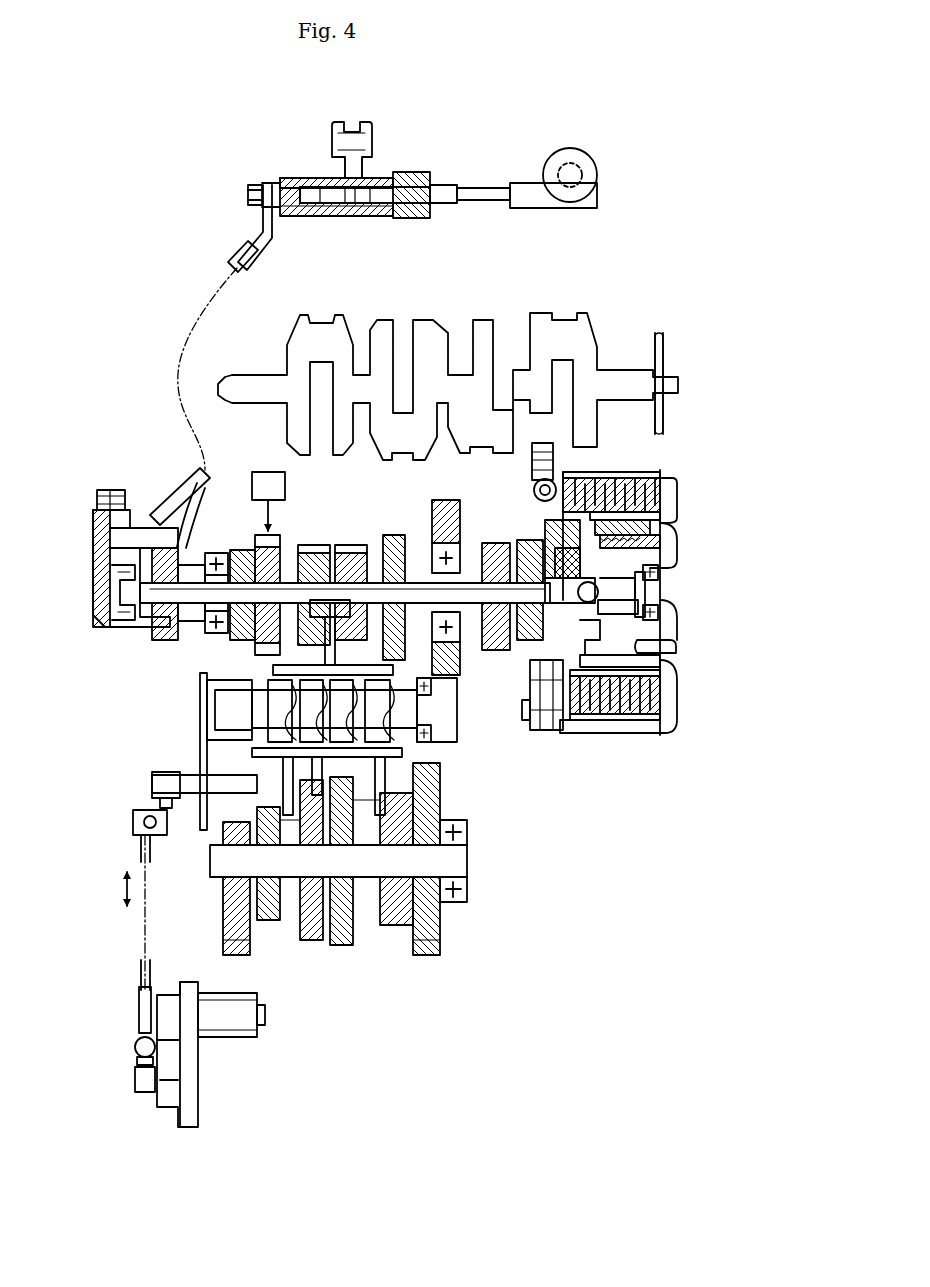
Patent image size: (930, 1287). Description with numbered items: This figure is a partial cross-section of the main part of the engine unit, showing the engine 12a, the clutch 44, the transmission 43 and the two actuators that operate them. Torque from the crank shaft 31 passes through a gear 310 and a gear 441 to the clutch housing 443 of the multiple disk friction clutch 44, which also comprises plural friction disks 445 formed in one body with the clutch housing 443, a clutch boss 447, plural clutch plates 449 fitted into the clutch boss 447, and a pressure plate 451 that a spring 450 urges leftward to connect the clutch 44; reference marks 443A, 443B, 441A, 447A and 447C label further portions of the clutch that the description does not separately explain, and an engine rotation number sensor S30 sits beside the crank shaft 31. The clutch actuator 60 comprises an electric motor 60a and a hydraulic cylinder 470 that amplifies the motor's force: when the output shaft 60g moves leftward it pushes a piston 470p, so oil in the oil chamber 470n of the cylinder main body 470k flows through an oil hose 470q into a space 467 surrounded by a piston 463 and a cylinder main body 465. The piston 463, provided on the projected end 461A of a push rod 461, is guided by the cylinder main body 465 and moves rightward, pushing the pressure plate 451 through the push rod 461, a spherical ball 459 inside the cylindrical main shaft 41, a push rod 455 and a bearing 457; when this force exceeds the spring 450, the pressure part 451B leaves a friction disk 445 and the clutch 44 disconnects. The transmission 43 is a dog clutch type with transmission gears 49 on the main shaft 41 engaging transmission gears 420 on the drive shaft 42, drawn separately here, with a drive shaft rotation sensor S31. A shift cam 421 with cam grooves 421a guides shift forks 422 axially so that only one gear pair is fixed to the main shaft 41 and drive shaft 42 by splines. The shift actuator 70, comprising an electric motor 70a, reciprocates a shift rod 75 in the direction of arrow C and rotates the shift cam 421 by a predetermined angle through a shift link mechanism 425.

The hydraulic cylinder 470 is at (418, 176).
The cylinder main body 470k is at (305, 180).
The oil chamber 470n is at (338, 204).
The piston 470p is at (442, 206).
The oil hose 470q is at (240, 258).
The clutch actuator 60 is at (603, 196).
The output shaft 60g is at (496, 188).
The electric motor 60a is at (572, 150).
The engine 12a is at (584, 298).
The crank shaft 31 is at (500, 318).
The gear 310 is at (537, 482).
The engine rotation number sensor S30 is at (664, 340).
The gear 441 is at (535, 458).
The clutch housing 443 is at (615, 470).
The clutch plates 449 is at (636, 474).
The friction disks 445 is at (662, 478).
The clutch 44 is at (682, 483).
The pressure plate 451 is at (676, 496).
The spring 450 is at (676, 530).
The primary driven gear 443B is at (530, 505).
The clutch boss 443A is at (556, 521).
The clutch inner member 441A is at (566, 536).
The main shaft 41 is at (412, 548).
The end of push rod 461A is at (160, 576).
The piston 463 is at (210, 510).
The space 467 is at (112, 588).
The cylinder main body 465 is at (113, 628).
The push rod 461 is at (299, 590).
The drive shaft rotation sensor S31 is at (287, 487).
The transmission gears 49 is at (351, 540).
The push rod 455 is at (657, 592).
The spherical ball 459 is at (665, 616).
The bearing 457 is at (672, 644).
The clutch boss 447 is at (660, 662).
The second clutch plates 447C is at (670, 674).
The pressure part 451B is at (668, 716).
The pressure plate arm 447A is at (565, 726).
The shift cam 421 is at (273, 684).
The cam grooves 421a is at (374, 700).
The shift forks 422 is at (330, 644).
The shift link mechanism 425 is at (142, 778).
The drive shaft 42 is at (462, 851).
The transmission gears 420 is at (446, 798).
The transmission 43 is at (530, 838).
The shift rod 75 is at (146, 847).
The arrow C is at (114, 889).
The electric motor 70a is at (259, 1030).
The shift actuator 70 is at (211, 1083).